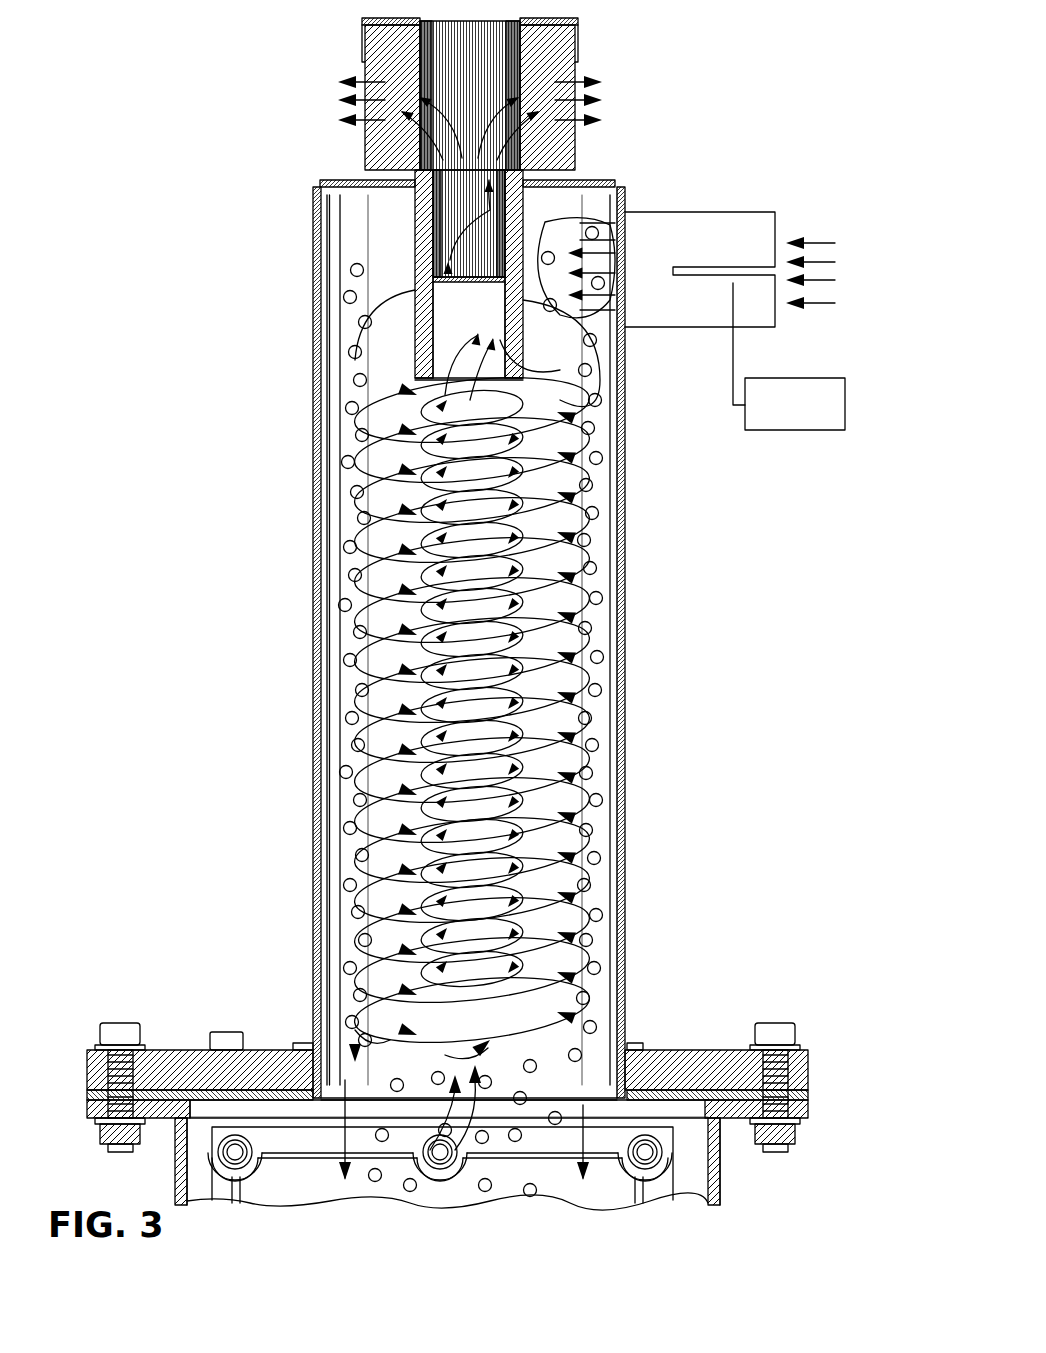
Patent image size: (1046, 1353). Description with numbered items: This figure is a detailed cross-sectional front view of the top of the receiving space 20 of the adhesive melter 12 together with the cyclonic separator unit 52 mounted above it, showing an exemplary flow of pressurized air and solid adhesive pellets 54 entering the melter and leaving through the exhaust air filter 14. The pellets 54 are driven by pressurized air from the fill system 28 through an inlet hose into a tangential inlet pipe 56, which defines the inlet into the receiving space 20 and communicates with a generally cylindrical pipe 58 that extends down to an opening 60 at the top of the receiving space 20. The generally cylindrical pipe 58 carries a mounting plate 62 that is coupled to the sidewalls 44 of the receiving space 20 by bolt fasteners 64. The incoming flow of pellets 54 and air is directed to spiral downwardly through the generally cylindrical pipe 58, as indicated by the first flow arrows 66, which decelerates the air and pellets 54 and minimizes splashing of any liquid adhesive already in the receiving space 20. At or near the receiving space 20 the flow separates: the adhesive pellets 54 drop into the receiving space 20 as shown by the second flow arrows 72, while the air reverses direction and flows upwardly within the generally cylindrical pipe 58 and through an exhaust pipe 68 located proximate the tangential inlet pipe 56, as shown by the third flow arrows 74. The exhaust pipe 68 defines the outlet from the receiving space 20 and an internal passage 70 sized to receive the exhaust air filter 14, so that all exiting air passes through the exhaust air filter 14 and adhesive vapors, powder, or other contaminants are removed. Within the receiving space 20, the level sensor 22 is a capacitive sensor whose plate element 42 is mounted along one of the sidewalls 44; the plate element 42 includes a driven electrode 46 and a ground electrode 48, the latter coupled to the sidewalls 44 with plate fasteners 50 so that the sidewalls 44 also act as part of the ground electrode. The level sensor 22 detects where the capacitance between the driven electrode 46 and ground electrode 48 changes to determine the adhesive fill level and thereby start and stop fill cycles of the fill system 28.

The adhesive melter 12 is at (308, 178).
The exhaust air filter 14 is at (378, 55).
The receiving space 20 is at (728, 1168).
The level sensor 22 is at (205, 1183).
The fill system 28 is at (843, 378).
The plate element 42 is at (203, 1186).
The sidewalls 44 is at (175, 1170).
The driven electrode 46 is at (526, 1180).
The ground electrode 48 is at (658, 1180).
The plate fasteners 50 is at (235, 1160).
The cyclonic separator unit 52 is at (630, 447).
The adhesive pellets 54 is at (604, 283).
The tangential inlet pipe 56 is at (683, 212).
The generally cylindrical pipe 58 is at (627, 580).
The opening 60 is at (602, 1097).
The mounting plate 62 is at (680, 1060).
The bolt fasteners 64 is at (120, 1030).
The first flow arrows 66 is at (818, 243).
The exhaust pipe 68 is at (415, 288).
The internal passage 70 is at (433, 353).
The second flow arrows 72 is at (343, 1130).
The third flow arrows 74 is at (575, 72).